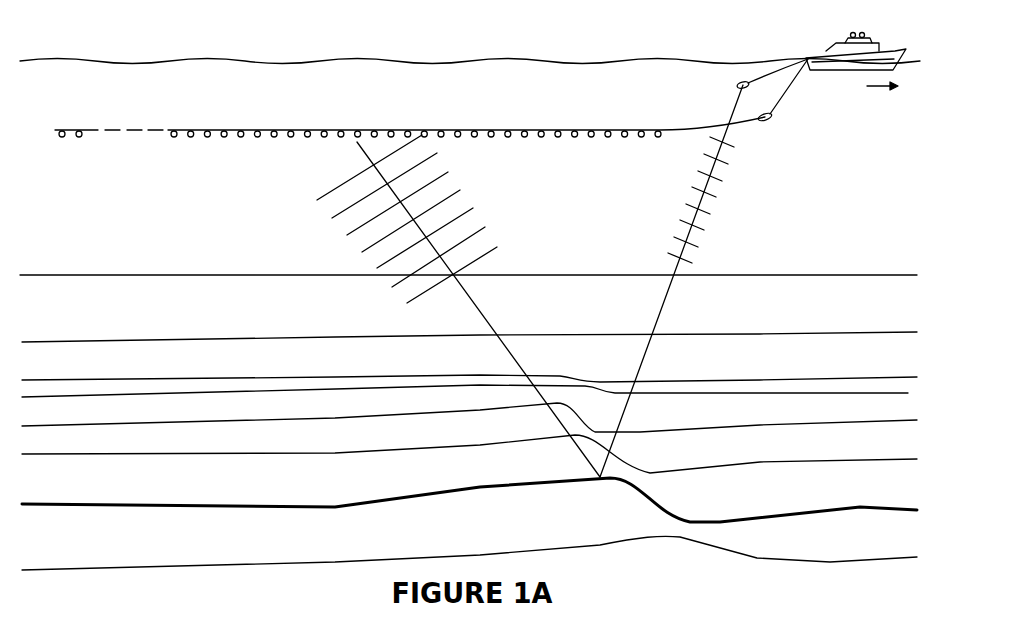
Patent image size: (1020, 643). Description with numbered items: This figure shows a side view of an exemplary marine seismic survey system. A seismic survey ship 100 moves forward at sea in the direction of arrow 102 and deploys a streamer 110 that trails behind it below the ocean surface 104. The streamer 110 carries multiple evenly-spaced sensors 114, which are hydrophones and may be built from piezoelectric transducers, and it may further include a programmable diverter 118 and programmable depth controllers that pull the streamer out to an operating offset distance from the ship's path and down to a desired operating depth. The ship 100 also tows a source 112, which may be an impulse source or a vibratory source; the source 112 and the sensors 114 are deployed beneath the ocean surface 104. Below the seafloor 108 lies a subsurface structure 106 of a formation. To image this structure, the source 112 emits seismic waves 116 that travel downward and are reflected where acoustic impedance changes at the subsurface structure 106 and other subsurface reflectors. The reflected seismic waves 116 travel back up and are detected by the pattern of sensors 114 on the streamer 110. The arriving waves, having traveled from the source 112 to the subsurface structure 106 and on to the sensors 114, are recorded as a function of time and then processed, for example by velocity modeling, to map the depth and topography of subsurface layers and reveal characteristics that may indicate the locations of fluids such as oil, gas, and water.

The seismic survey ship 100 is at (837, 52).
The arrow 102 is at (885, 103).
The ocean surface 104 is at (507, 63).
The subsurface structure 106 is at (633, 492).
The seafloor 108 is at (823, 275).
The streamer 110 is at (785, 98).
The source 112 is at (738, 84).
The sensors 114 is at (207, 137).
The seismic waves 116 is at (693, 217).
The programmable diverter 118 is at (768, 122).